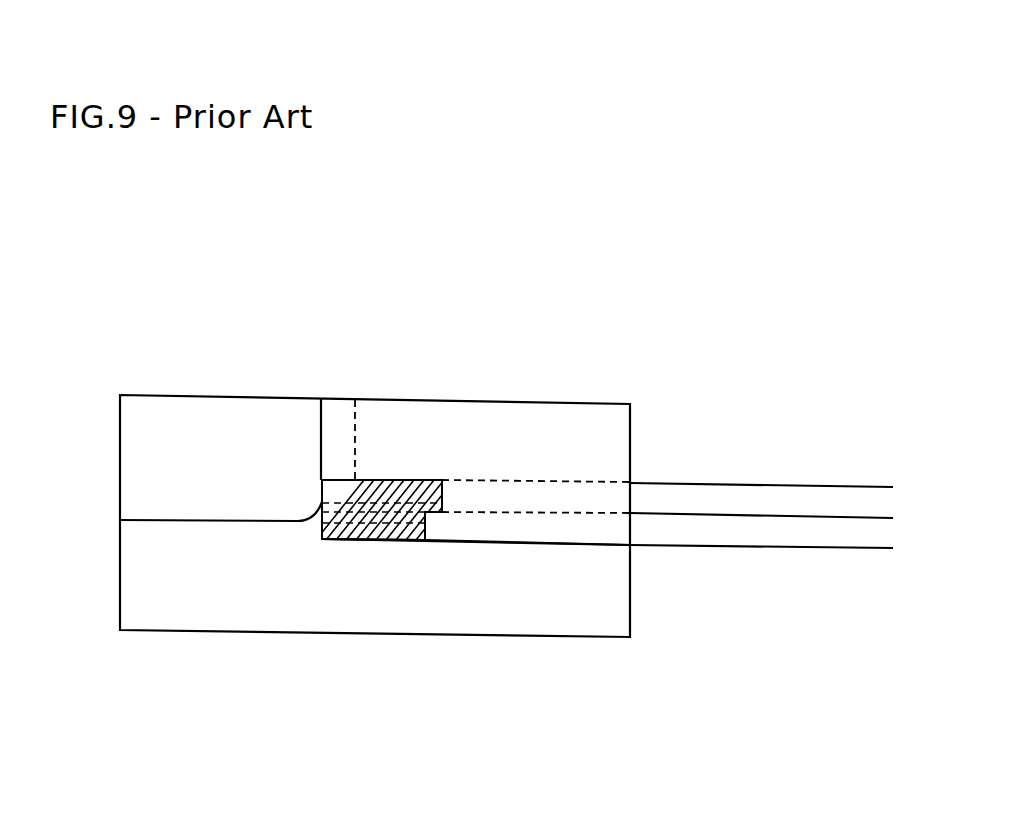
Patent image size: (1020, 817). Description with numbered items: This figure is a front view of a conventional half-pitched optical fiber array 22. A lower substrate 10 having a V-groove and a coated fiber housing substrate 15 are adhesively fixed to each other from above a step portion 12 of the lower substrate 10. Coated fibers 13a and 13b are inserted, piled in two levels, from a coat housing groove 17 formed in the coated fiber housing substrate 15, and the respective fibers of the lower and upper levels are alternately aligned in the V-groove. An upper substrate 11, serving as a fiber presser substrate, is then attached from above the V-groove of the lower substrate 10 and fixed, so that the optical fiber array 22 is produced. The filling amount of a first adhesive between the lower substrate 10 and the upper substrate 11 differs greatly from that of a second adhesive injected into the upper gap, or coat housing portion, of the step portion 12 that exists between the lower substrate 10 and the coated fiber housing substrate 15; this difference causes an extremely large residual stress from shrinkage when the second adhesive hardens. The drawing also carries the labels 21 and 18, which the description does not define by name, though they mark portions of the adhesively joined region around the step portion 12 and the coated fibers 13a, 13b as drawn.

The optical fiber array 22 is at (106, 414).
The upper substrate 11 is at (137, 463).
The lower substrate 10 is at (140, 573).
The coated fiber housing substrate 15 is at (393, 410).
The adhesive / fixing resin 21 is at (405, 480).
The coated fiber 13a is at (588, 500).
The coat housing groove 17 is at (600, 498).
The coated fiber 13b is at (597, 533).
The step portion 12 is at (368, 543).
The bonding surface 18 is at (540, 545).